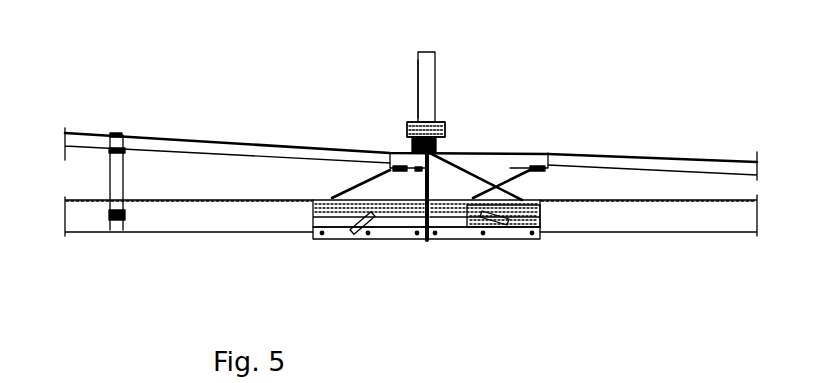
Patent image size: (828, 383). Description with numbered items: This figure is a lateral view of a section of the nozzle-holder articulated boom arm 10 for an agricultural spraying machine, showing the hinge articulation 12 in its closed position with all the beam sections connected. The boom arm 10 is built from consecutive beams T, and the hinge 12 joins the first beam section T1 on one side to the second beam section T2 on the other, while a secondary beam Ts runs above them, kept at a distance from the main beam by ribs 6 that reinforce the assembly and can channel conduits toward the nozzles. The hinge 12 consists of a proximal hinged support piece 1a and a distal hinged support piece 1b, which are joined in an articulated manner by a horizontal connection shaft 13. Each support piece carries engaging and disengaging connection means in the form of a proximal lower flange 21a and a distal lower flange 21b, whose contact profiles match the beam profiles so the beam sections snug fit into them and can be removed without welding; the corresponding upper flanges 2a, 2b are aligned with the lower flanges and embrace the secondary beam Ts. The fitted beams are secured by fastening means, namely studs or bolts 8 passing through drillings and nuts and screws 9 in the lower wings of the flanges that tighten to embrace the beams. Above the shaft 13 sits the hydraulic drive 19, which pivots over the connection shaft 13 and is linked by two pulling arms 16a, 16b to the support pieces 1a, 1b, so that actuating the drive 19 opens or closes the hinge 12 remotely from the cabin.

The articulated boom arm 10 is at (104, 96).
The ribs 6 is at (120, 172).
The secondary beam section Ts is at (670, 87).
The beam T is at (630, 382).
The first beam section T1 is at (200, 212).
The second beam section T2 is at (687, 213).
The hinge articulation 12 is at (316, 307).
The proximal hinged support piece 1a is at (424, 253).
The distal hinged support piece 1b is at (539, 253).
The proximal lower flange 21a is at (311, 224).
The distal lower flange 21b is at (540, 232).
The nuts and screws 9 is at (473, 218).
The studs or bolts 8 is at (340, 196).
The proximal upper flange 2a is at (388, 150).
The distal upper flange 2b is at (540, 160).
The connection shaft 13 is at (428, 115).
The hydraulic drive 19 is at (410, 80).
The first pulling arm 16a is at (404, 153).
The second pulling arm 16b is at (450, 145).